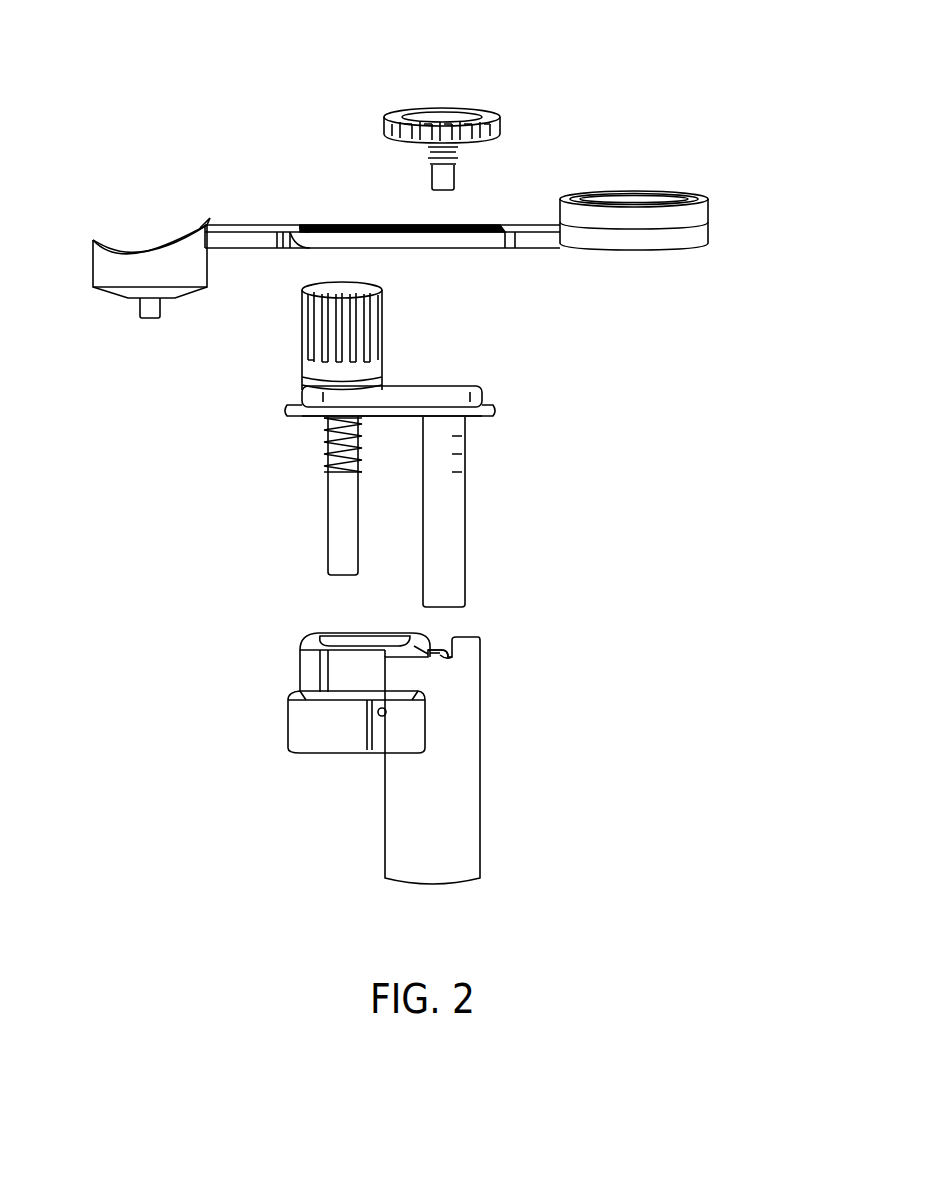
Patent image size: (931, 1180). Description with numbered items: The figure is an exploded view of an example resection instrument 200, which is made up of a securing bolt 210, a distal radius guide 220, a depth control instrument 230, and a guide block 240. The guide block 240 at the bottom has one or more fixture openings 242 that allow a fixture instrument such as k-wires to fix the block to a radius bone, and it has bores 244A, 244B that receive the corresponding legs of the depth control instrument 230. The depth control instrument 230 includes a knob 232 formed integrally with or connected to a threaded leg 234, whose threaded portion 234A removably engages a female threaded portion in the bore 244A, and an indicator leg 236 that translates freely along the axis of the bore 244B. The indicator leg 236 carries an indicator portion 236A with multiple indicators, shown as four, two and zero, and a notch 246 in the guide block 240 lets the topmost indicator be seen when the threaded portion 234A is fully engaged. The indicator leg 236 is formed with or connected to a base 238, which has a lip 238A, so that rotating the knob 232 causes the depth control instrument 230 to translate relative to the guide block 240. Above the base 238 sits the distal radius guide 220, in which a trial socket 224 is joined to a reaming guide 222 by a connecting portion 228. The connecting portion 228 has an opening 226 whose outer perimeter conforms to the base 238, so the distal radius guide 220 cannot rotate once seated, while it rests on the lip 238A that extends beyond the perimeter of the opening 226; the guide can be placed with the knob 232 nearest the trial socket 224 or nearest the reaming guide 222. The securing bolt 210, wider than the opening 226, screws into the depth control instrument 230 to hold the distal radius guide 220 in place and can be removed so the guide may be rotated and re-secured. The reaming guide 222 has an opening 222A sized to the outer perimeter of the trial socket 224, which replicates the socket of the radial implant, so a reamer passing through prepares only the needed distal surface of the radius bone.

The resection instrument 200 is at (178, 88).
The securing bolt 210 is at (470, 118).
The distal radius guide 220 is at (710, 178).
The reaming guide 222 is at (700, 238).
The opening 222A is at (632, 190).
The trial socket 224 is at (122, 250).
The opening 226 is at (348, 222).
The connecting portion 228 is at (530, 237).
The depth control instrument 230 is at (575, 365).
The knob 232 is at (316, 372).
The threaded leg 234 is at (335, 540).
The threaded portion 234A is at (320, 443).
The indicator leg 236 is at (455, 535).
The indicator portion 236A is at (475, 440).
The base 238 is at (482, 395).
The lip 238A is at (490, 410).
The guide block 240 is at (482, 795).
The fixture openings 242 is at (383, 716).
The bore 244A is at (330, 632).
The bore 244B is at (438, 636).
The notch 246 is at (450, 655).